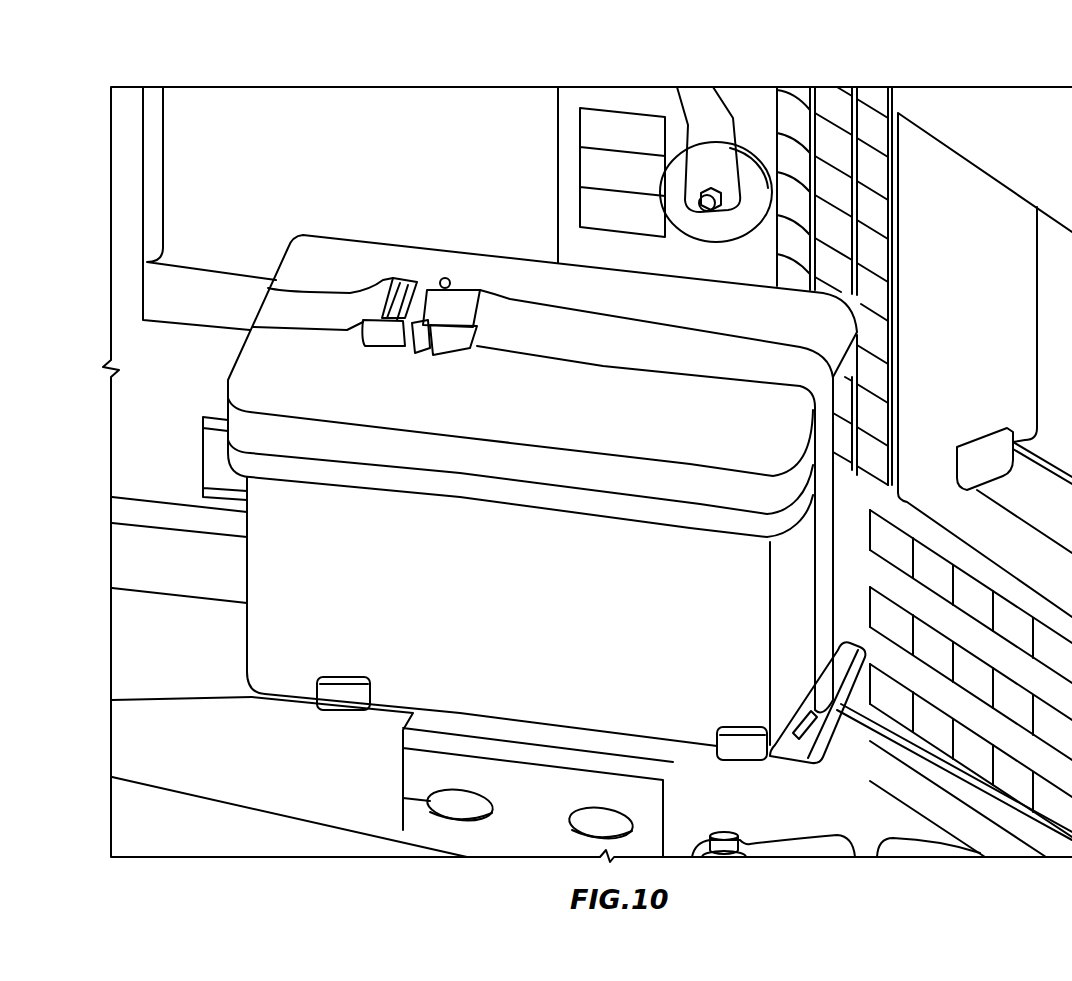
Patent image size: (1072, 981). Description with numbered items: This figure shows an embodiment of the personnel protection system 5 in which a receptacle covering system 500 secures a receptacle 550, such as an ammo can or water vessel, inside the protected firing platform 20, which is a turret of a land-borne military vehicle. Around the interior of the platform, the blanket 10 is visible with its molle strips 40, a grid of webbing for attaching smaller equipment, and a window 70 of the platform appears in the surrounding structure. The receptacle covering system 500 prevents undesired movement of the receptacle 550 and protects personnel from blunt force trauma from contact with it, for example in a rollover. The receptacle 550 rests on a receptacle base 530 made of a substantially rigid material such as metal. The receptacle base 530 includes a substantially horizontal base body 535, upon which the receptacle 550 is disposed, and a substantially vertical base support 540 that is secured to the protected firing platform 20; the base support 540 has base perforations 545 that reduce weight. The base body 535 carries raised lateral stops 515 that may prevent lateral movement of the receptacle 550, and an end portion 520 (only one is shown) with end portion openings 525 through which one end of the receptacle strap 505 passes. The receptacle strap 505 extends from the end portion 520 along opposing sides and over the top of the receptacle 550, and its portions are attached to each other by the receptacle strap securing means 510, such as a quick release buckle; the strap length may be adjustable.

The personnel protection system 5 is at (748, 73).
The blanket 10 is at (628, 100).
The protected firing platform 20 is at (832, 87).
The molle strips 40 is at (870, 208).
The window 70 is at (217, 122).
The receptacle covering system 500 is at (358, 252).
The receptacle strap 505 is at (317, 300).
The receptacle strap securing means 510 is at (443, 278).
The lateral stops 515 is at (752, 752).
The end portion 520 is at (820, 738).
The end portion openings 525 is at (837, 645).
The receptacle base 530 is at (397, 747).
The base body 535 is at (400, 732).
The base support 540 is at (400, 798).
The base perforations 545 is at (450, 807).
The receptacle 550 is at (273, 623).